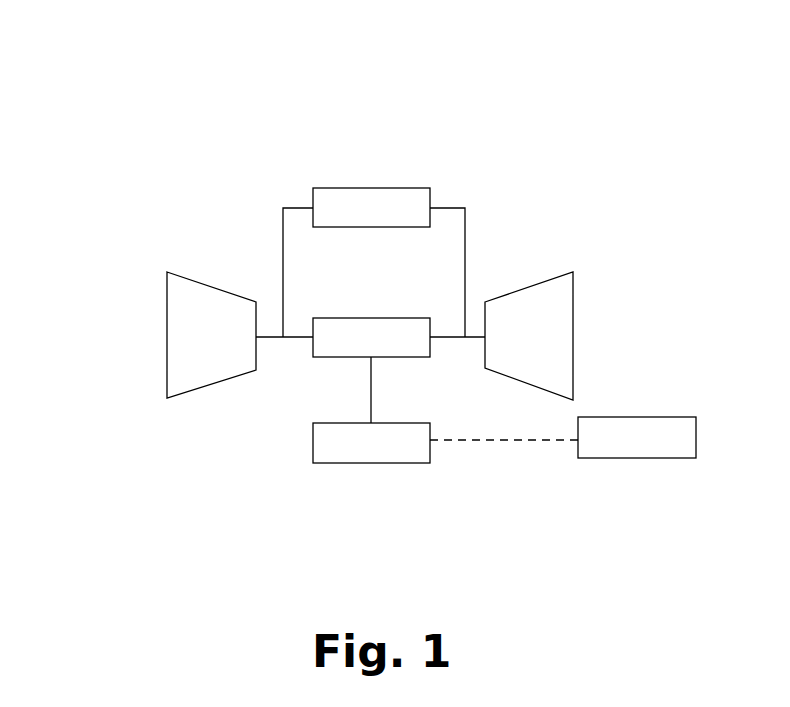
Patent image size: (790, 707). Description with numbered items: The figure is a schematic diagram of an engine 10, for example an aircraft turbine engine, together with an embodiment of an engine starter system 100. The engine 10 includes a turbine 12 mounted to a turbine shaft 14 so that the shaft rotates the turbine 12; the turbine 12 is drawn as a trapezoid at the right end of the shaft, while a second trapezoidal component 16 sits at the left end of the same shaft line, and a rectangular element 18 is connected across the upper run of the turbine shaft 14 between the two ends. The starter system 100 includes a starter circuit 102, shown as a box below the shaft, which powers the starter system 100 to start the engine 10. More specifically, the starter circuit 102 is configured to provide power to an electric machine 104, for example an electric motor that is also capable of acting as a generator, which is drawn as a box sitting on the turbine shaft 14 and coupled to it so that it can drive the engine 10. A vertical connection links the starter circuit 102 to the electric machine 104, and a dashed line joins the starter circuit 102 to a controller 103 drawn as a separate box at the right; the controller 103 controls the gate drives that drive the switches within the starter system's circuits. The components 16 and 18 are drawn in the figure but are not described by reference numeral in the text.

The engine 10 is at (83, 133).
The starter system 100 is at (265, 193).
The turbine 12 is at (534, 283).
The turbine shaft 14 is at (458, 206).
The compressor 16 is at (196, 282).
The combustor 18 is at (353, 188).
The starter circuit 102 is at (345, 464).
The controller 103 is at (627, 459).
The electric machine 104 is at (345, 359).